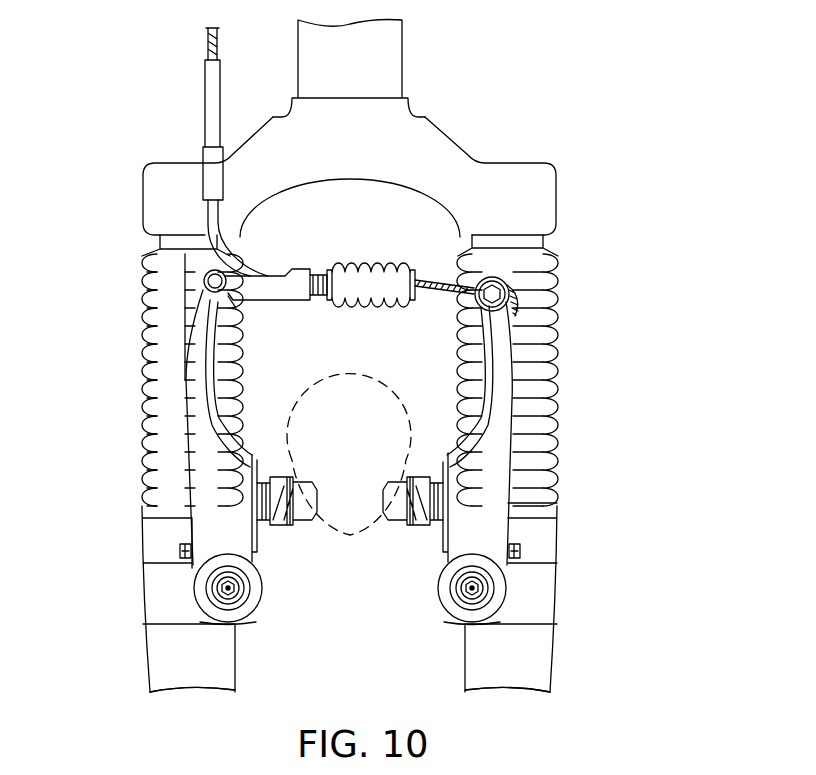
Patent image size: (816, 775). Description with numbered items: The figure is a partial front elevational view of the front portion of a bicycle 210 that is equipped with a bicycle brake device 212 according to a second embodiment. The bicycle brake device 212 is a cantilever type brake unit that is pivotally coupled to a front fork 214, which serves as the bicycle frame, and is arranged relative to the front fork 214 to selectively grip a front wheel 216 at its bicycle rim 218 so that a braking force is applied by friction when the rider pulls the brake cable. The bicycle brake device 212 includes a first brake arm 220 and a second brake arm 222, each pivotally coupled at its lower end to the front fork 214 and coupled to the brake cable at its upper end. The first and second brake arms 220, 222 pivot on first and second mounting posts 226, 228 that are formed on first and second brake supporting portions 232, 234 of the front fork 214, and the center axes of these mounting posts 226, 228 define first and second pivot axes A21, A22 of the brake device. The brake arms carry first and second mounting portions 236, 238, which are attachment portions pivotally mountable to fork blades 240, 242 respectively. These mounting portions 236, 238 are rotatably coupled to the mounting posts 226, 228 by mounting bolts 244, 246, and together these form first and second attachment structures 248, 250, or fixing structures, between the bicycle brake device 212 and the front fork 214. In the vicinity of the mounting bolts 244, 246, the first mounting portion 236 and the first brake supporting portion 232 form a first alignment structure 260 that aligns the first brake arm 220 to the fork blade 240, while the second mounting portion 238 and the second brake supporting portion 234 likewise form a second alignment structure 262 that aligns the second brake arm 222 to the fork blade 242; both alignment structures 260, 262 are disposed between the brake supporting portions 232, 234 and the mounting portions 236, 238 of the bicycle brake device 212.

The bicycle 210 is at (538, 68).
The bicycle brake device 212 is at (363, 253).
The front fork 214 is at (578, 195).
The front wheel 216 is at (313, 387).
The bicycle rim 218 is at (356, 535).
The first brake arm 220 is at (507, 360).
The second brake arm 222 is at (190, 375).
The first mounting post 226 is at (448, 573).
The second mounting post 228 is at (257, 573).
The first brake supporting portion 232 is at (518, 607).
The second brake supporting portion 234 is at (185, 607).
The first mounting portion 236 is at (498, 580).
The second mounting portion 238 is at (203, 568).
The fork blade 240 is at (540, 533).
The fork blade 242 is at (157, 533).
The mounting bolt 244 is at (470, 577).
The mounting bolt 246 is at (230, 568).
The first attachment structure 248 is at (437, 623).
The second attachment structure 250 is at (258, 623).
The first alignment structure 260 is at (494, 631).
The second alignment structure 262 is at (200, 625).
The first pivot axis A21 is at (466, 588).
The second pivot axis A22 is at (233, 588).